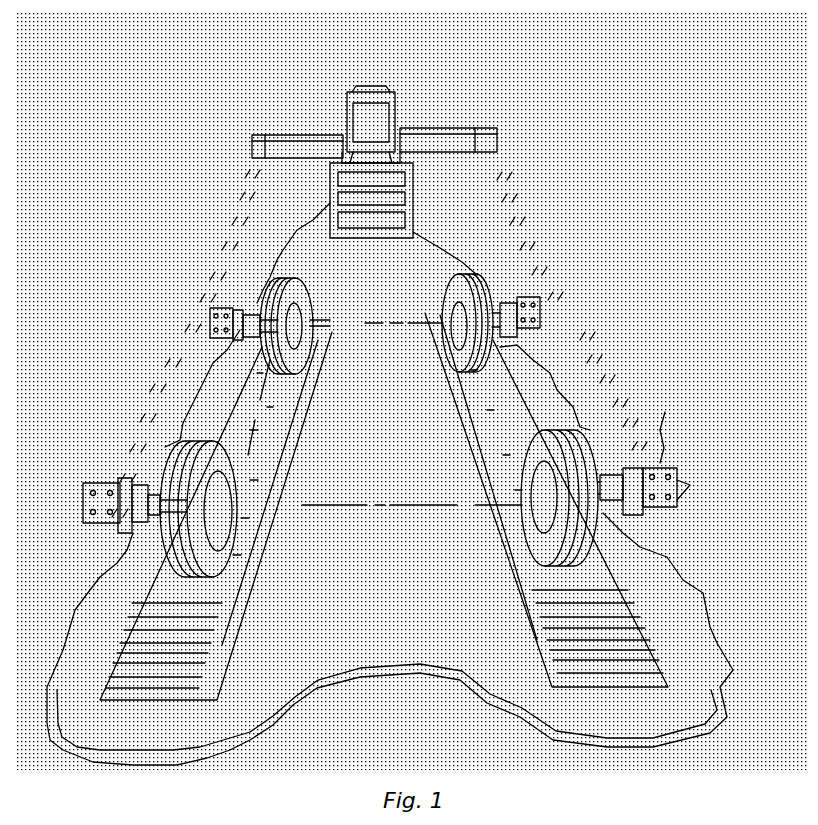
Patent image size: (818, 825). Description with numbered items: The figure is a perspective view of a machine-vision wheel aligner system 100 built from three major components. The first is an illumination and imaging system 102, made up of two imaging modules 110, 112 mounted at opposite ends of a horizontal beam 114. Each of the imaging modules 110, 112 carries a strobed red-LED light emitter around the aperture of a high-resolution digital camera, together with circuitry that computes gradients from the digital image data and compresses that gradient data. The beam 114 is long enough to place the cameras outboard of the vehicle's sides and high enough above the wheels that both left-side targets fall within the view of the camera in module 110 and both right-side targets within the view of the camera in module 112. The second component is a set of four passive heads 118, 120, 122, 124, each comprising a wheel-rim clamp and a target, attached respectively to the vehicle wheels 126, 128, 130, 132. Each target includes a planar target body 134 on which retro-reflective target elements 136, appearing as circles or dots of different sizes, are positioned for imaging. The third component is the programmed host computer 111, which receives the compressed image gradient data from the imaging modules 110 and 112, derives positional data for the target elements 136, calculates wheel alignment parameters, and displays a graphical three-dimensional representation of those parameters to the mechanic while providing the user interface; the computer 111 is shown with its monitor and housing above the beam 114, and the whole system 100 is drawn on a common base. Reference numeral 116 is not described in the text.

The aligner system 100 is at (693, 300).
The illumination and imaging system 102 is at (397, 136).
The imaging module 110 is at (258, 140).
The host computer 111 is at (375, 92).
The imaging module 112 is at (500, 135).
The horizontal beam 114 is at (305, 128).
The cables 116 is at (323, 258).
The passive head (target) 118 is at (210, 337).
The passive head (target) 120 is at (83, 515).
The passive head (target) 122 is at (543, 305).
The passive head (target) 124 is at (623, 482).
The vehicle wheel 126 is at (232, 516).
The vehicle wheel 128 is at (262, 551).
The vehicle wheel 130 is at (443, 360).
The vehicle wheel 132 is at (497, 527).
The target body 134 is at (673, 430).
The target elements 136 is at (680, 493).